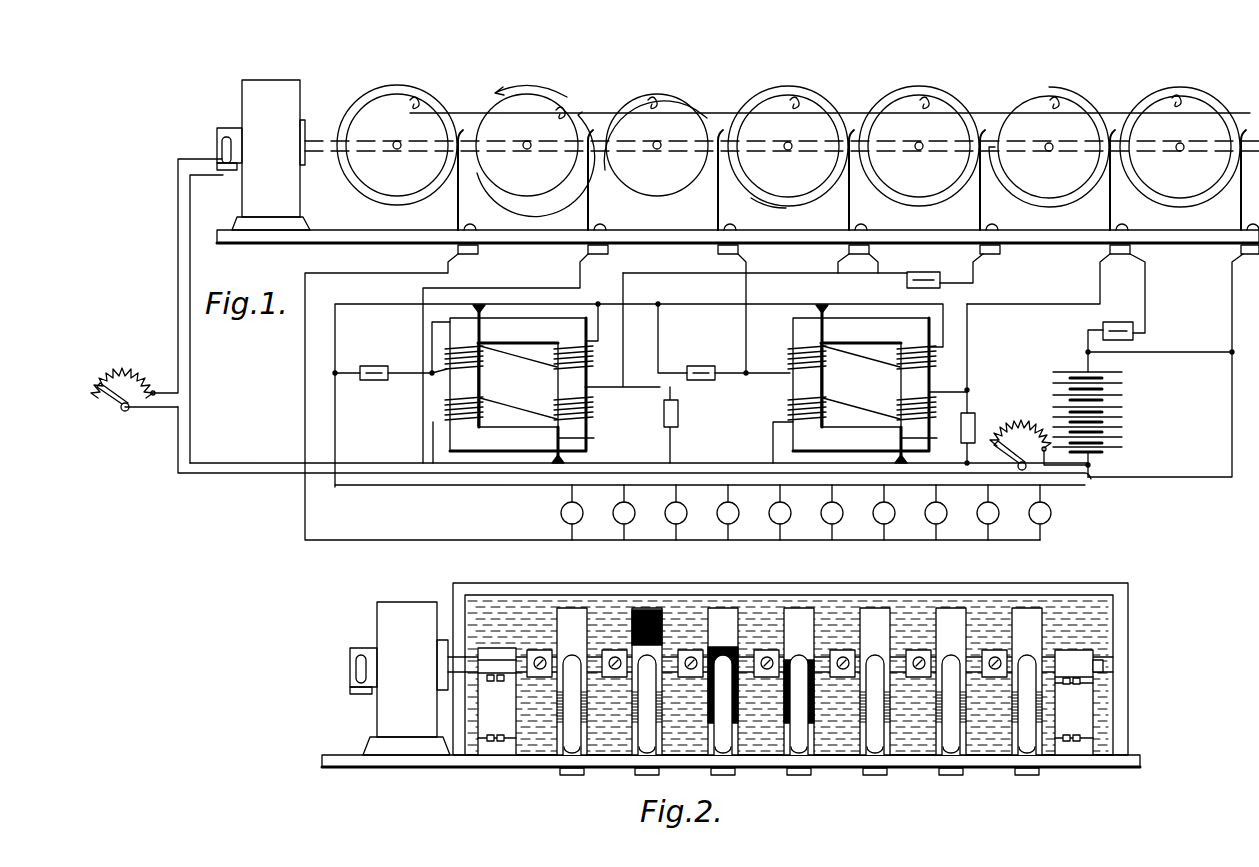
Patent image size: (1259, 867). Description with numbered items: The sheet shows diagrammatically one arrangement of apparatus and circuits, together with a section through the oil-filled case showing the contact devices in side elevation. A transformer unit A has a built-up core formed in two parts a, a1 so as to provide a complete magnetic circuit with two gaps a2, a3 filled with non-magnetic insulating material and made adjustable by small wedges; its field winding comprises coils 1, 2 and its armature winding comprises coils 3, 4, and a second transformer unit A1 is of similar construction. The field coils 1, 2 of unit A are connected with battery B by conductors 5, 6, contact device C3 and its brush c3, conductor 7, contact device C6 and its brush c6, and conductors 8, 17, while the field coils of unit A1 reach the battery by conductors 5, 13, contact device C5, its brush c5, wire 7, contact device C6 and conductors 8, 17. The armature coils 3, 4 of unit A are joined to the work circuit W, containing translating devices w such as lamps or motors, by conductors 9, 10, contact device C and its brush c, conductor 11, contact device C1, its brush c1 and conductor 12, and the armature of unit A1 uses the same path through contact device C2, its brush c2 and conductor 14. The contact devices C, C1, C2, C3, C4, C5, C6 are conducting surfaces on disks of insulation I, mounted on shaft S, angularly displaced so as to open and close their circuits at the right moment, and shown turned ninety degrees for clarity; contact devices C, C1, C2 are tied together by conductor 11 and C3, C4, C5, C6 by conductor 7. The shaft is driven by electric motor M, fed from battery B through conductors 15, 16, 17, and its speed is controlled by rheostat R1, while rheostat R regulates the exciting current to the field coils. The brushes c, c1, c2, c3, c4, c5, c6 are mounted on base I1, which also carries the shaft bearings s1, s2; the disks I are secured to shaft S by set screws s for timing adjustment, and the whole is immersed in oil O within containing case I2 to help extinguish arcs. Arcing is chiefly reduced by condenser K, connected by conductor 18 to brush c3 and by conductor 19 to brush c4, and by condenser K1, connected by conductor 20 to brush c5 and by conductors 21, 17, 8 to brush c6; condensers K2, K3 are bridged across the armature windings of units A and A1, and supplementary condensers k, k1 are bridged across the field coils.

In FIG. 1, the electric motor M is at (285, 108).
In FIG. 2, the electric motor M is at (364, 618).
In FIG. 1, the shaft S is at (326, 147).
In FIG. 2, the shaft S is at (439, 608).
In FIG. 1, the disks of insulation I is at (395, 173).
In FIG. 2, the disks of insulation I is at (662, 640).
In FIG. 1, the base I1 is at (322, 245).
In FIG. 2, the base I1 is at (1065, 768).
In FIG. 2, the containing case I2 is at (1130, 624).
In FIG. 1, the contact device C is at (397, 130).
In FIG. 2, the contact device C is at (573, 618).
In FIG. 1, the contact device C1 is at (535, 139).
In FIG. 2, the contact device C1 is at (628, 650).
In FIG. 1, the contact device C2 is at (656, 125).
In FIG. 2, the contact device C2 is at (722, 625).
In FIG. 1, the contact device C3 is at (788, 128).
In FIG. 2, the contact device C3 is at (800, 620).
In FIG. 1, the contact device C4 is at (919, 127).
In FIG. 2, the contact device C4 is at (875, 620).
In FIG. 1, the contact device C5 is at (1049, 127).
In FIG. 2, the contact device C5 is at (950, 620).
In FIG. 1, the contact device C6 is at (1180, 128).
In FIG. 2, the contact device C6 is at (1027, 620).
In FIG. 1, the brush c is at (457, 212).
In FIG. 2, the brush c is at (570, 735).
In FIG. 1, the brush c1 is at (587, 212).
In FIG. 2, the brush c1 is at (645, 735).
In FIG. 1, the brush c2 is at (717, 212).
In FIG. 2, the brush c2 is at (725, 735).
In FIG. 1, the brush c3 is at (848, 212).
In FIG. 2, the brush c3 is at (800, 735).
In FIG. 1, the brush c4 is at (979, 212).
In FIG. 2, the brush c4 is at (875, 735).
In FIG. 1, the brush c5 is at (1109, 212).
In FIG. 2, the brush c5 is at (950, 735).
In FIG. 1, the brush c6 is at (1240, 212).
In FIG. 2, the brush c6 is at (1025, 735).
In FIG. 2, the oil O is at (505, 607).
In FIG. 2, the set screws s is at (616, 660).
In FIG. 2, the bearing s1 is at (500, 715).
In FIG. 2, the bearing s2 is at (1080, 707).
In FIG. 1, the conductor 7 is at (980, 113).
In FIG. 2, the conductor 7 is at (985, 645).
In FIG. 1, the conductor 11 is at (464, 111).
In FIG. 2, the conductor 11 is at (685, 645).
In FIG. 1, the transformer unit A is at (515, 383).
In FIG. 1, the transformer unit A1 is at (870, 384).
In FIG. 1, the core part a is at (509, 328).
In FIG. 1, the core part a1 is at (455, 440).
In FIG. 1, the gap a2 is at (781, 439).
In FIG. 1, the gap a3 is at (821, 322).
In FIG. 1, the field coil 1 is at (447, 406).
In FIG. 1, the field coil 2 is at (590, 412).
In FIG. 1, the armature coil 3 is at (447, 355).
In FIG. 1, the armature coil 4 is at (590, 388).
In FIG. 1, the conductor 5 is at (678, 468).
In FIG. 1, the conductor 6 is at (623, 360).
In FIG. 1, the conductor 8 is at (1232, 306).
In FIG. 1, the conductor 9 is at (588, 302).
In FIG. 1, the conductor 10 is at (290, 398).
In FIG. 1, the conductor 12 is at (505, 358).
In FIG. 1, the conductor 13 is at (969, 358).
In FIG. 1, the conductor 14 is at (746, 290).
In FIG. 1, the conductor 15 is at (186, 378).
In FIG. 1, the conductor 16 is at (186, 418).
In FIG. 1, the conductor 17 is at (1165, 356).
In FIG. 1, the conductor 18 is at (858, 276).
In FIG. 1, the conductor 19 is at (973, 284).
In FIG. 1, the conductor 20 is at (1147, 296).
In FIG. 1, the conductor 21 is at (1088, 335).
In FIG. 1, the condenser K is at (923, 270).
In FIG. 1, the condenser K1 is at (1118, 321).
In FIG. 1, the condenser K2 is at (391, 368).
In FIG. 1, the condenser K3 is at (724, 342).
In FIG. 1, the supplementary condenser k is at (679, 425).
In FIG. 1, the supplementary condenser k1 is at (975, 429).
In FIG. 1, the battery B is at (1122, 410).
In FIG. 1, the rheostat R is at (1039, 433).
In FIG. 1, the rheostat R1 is at (123, 367).
In FIG. 1, the work circuit W is at (512, 486).
In FIG. 1, the translating devices w is at (561, 518).